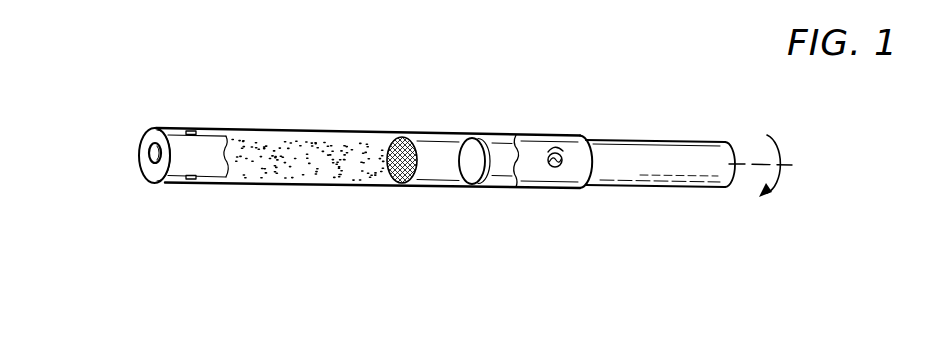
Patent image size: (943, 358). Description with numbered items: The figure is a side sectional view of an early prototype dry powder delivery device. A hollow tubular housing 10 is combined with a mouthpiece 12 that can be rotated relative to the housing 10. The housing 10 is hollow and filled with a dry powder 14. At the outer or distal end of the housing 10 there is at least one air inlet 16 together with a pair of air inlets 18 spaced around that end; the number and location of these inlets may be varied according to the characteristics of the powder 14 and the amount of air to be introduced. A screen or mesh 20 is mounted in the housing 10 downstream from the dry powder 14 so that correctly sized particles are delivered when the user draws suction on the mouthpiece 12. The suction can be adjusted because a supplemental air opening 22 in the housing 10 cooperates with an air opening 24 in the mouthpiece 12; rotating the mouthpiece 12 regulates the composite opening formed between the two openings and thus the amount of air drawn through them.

The hollow tubular housing 10 is at (345, 130).
The mouthpiece 12 is at (677, 188).
The dry powder 14 is at (283, 172).
The air inlet 16 is at (150, 155).
The air inlets 18 is at (193, 130).
The screen or mesh 20 is at (426, 135).
The supplemental air opening 22 is at (555, 170).
The cooperating air opening 24 is at (563, 147).